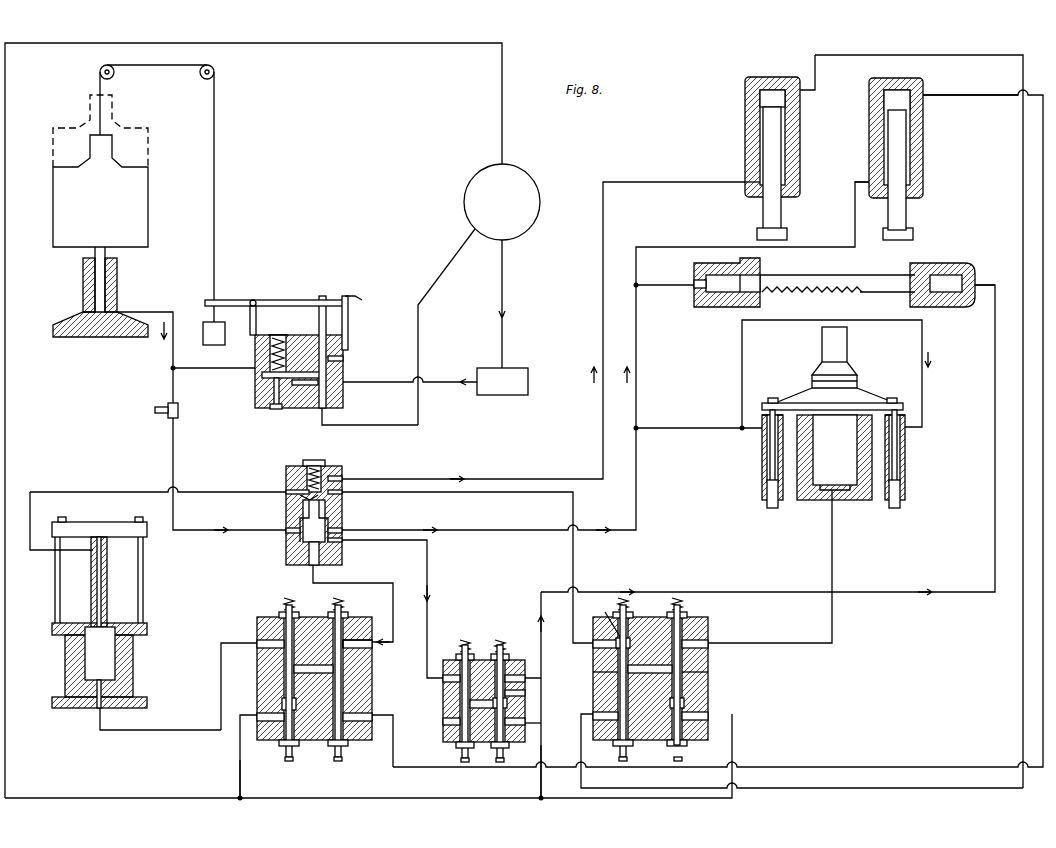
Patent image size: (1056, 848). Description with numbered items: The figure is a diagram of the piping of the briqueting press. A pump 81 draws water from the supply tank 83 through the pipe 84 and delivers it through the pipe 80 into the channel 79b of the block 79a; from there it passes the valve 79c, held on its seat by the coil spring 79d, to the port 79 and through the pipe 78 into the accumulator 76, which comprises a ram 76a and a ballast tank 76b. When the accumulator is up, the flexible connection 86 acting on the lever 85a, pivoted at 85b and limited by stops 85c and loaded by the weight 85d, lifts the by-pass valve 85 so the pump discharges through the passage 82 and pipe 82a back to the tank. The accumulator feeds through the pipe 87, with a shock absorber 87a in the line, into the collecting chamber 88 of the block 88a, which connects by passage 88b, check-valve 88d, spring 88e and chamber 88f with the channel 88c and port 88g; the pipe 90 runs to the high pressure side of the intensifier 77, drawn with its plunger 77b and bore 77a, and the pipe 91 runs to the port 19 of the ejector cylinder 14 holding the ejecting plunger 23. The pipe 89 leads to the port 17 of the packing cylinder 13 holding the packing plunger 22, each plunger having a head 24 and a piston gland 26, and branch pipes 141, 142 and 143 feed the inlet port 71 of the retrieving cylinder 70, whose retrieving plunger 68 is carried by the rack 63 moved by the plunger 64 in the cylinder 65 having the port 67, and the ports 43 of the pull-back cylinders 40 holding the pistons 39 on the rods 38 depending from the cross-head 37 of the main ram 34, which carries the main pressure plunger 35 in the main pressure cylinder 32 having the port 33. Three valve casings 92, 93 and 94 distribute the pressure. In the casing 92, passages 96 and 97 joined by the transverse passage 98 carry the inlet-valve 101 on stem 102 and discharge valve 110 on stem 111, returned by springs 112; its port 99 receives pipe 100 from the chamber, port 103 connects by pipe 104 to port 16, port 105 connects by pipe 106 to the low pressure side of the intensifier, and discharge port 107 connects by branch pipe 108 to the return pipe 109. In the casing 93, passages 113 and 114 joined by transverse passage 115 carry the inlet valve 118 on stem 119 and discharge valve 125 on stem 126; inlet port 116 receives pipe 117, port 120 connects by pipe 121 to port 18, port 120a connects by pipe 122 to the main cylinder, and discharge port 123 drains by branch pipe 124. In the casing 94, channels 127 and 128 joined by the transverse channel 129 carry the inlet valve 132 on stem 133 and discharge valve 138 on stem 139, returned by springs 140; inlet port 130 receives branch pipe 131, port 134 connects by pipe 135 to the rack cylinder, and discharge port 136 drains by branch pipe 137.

The return pipe 109 is at (395, 44).
The flexible connection 86 is at (214, 156).
The ballast tank 76b is at (142, 213).
The accumulator 76 is at (118, 283).
The ram 76a is at (97, 288).
The pipe 78 is at (169, 311).
The pipe 87 is at (174, 459).
The shock absorber 87a is at (166, 418).
The pipe 90 is at (225, 494).
The pipe 89 is at (470, 540).
The pipe 91 is at (497, 475).
The pipe 117 is at (513, 494).
The branch pipe 131 is at (427, 611).
The pipe 100 is at (366, 580).
The port 105 is at (257, 644).
The pipe 106 is at (143, 732).
The discharge port 107 is at (240, 736).
The branch pipe 108 is at (240, 774).
The port 103 is at (372, 714).
The pipe 104 is at (770, 770).
The pipe 135 is at (541, 605).
The discharge port 136 is at (541, 730).
The branch pipe 137 is at (541, 775).
The pipe 122 is at (780, 637).
The branch pipe 124 is at (733, 743).
The pipe 121 is at (926, 55).
The port 18 is at (800, 96).
The port 16 is at (923, 93).
The port 17 is at (858, 182).
The branch pipe 141 is at (651, 287).
The branch pipe 142 is at (696, 428).
The branch pipe 143 is at (779, 321).
The pipe 84 is at (502, 300).
The supply tank 83 is at (526, 224).
The pump 81 is at (528, 389).
The pipe 80 is at (393, 386).
The passage 82 is at (344, 401).
The pipe 82a is at (419, 412).
The port 79 is at (302, 384).
The block 79a is at (344, 360).
The channel 79b is at (300, 409).
The valve 79c is at (266, 395).
The coil spring 79d is at (271, 358).
The by-pass valve 85 is at (327, 376).
The lever 85a is at (289, 300).
The pivot 85b is at (252, 300).
The stops 85c is at (349, 302).
The weight 85d is at (212, 338).
The collecting chamber 88 is at (312, 507).
The block 88a is at (286, 512).
The passage 88b is at (342, 532).
The channel 88c is at (286, 478).
The check-valve 88d is at (342, 500).
The spring 88e is at (322, 468).
The chamber 88f is at (303, 463).
The port 88g is at (342, 480).
The valve casing 92 is at (312, 681).
The transverse passage 98 is at (305, 660).
The port 99 is at (368, 640).
The inlet-valve 101 is at (343, 646).
The passage 96 is at (343, 678).
The passage 97 is at (284, 677).
The discharge valve 110 is at (282, 700).
The springs 112 is at (284, 604).
The stem 111 is at (292, 750).
The stem 102 is at (341, 750).
The valve casing 94 is at (481, 695).
The inlet valve 132 is at (460, 680).
The port 134 is at (512, 675).
The transverse channel 129 is at (481, 700).
The channel 128 is at (505, 690).
The discharge valve 138 is at (507, 705).
The channel 127 is at (458, 700).
The springs 140 is at (462, 645).
The inlet port 130 is at (460, 660).
The stem 133 is at (461, 758).
The stem 139 is at (505, 757).
The valve casing 93 is at (652, 675).
The inlet port 116 is at (600, 646).
The port 120a is at (700, 648).
The transverse passage 115 is at (642, 665).
The passage 113 is at (618, 678).
The passage 114 is at (682, 675).
The discharge valve 125 is at (684, 700).
The discharge port 123 is at (708, 716).
The port 120 is at (605, 725).
The inlet valve 118 is at (618, 640).
The stem 126 is at (624, 608).
The stem 119 is at (624, 748).
The cylinder 14 is at (834, 153).
The piston gland 26 is at (762, 100).
The ejecting plunger 23 is at (773, 155).
The port 19 is at (745, 182).
The head 24 is at (787, 234).
The cylinder 13 is at (909, 154).
The packing plunger 22 is at (900, 163).
The retrieving cylinder 70 is at (713, 289).
The inlet port 71 is at (700, 282).
The retrieving plunger 68 is at (742, 290).
The plunger 64 is at (890, 285).
The rack 63 is at (818, 287).
The cylinder 65 is at (940, 302).
The port 67 is at (978, 276).
The main pressure plunger 35 is at (840, 345).
The cross-head 37 is at (903, 406).
The main pressure cylinder 32 is at (834, 468).
The main ram 34 is at (835, 452).
The port 33 is at (830, 503).
The pull-back cylinders 40 is at (830, 468).
The rods 38 is at (770, 459).
The pistons 39 is at (768, 505).
The port 43 is at (762, 430).
The intensifier 77 is at (99, 606).
The intensifier plunger 77b is at (108, 588).
The intensifier bore 77a is at (92, 657).